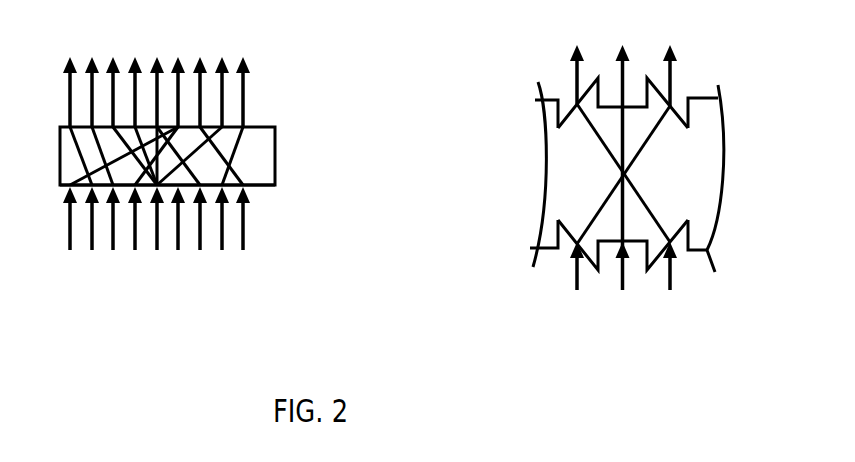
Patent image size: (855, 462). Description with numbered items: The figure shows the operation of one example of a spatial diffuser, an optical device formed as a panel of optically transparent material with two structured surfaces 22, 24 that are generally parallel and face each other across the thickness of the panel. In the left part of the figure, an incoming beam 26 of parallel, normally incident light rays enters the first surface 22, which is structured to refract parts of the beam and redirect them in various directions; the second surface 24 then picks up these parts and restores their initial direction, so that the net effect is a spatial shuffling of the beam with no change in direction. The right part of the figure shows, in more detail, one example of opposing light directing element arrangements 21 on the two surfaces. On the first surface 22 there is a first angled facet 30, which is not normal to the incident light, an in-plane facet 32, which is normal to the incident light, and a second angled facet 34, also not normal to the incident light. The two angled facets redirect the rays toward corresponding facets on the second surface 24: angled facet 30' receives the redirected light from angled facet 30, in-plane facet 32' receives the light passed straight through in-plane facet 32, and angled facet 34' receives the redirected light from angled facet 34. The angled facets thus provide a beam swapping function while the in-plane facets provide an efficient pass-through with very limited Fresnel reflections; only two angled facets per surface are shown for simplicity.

The opposing light directing element arrangements 21 is at (556, 108).
The first surface 22 is at (265, 187).
The second surface 24 is at (258, 127).
The incoming beam 26 is at (243, 230).
The first angled facet 30 is at (562, 289).
The in-plane facet 32 is at (613, 255).
The second angled facet 34 is at (678, 289).
The angled facet 30' is at (710, 75).
The in-plane facet 32' is at (657, 93).
The angled facet 34' is at (567, 55).